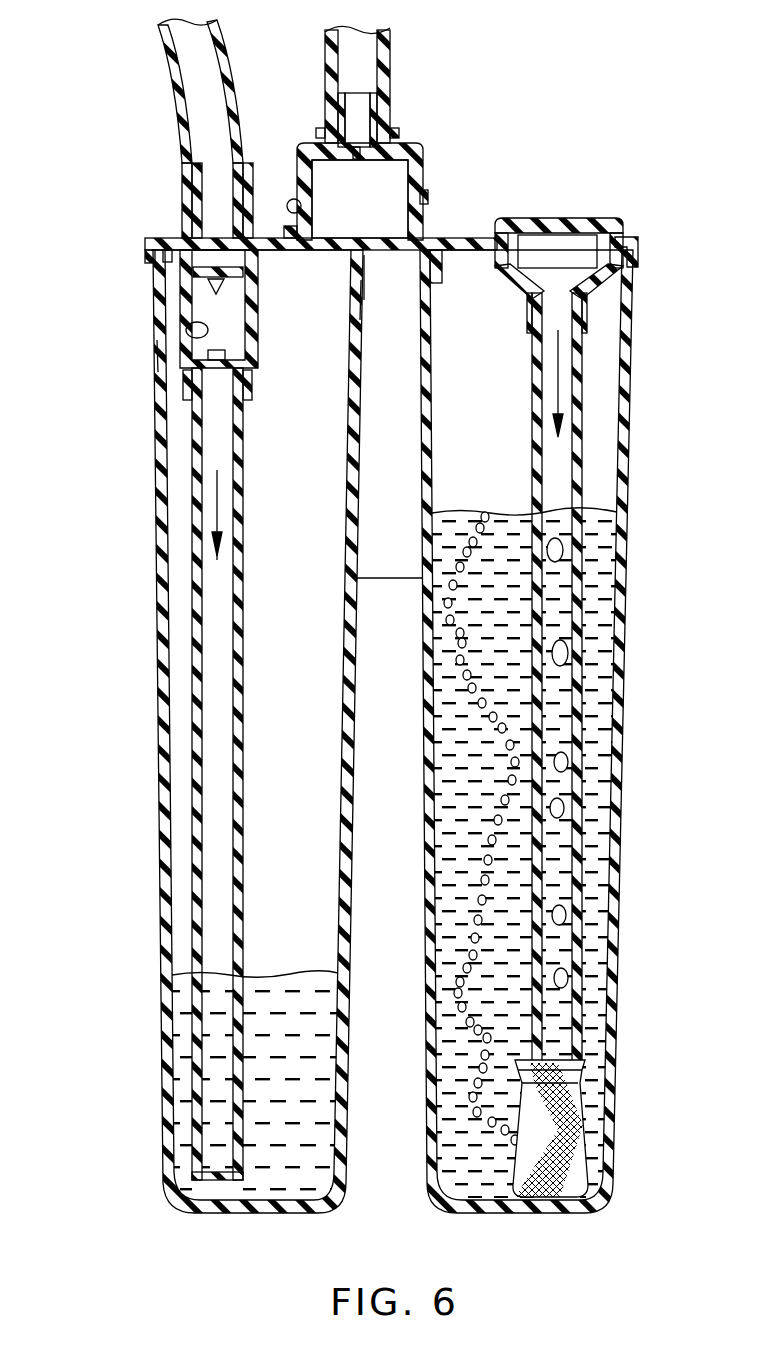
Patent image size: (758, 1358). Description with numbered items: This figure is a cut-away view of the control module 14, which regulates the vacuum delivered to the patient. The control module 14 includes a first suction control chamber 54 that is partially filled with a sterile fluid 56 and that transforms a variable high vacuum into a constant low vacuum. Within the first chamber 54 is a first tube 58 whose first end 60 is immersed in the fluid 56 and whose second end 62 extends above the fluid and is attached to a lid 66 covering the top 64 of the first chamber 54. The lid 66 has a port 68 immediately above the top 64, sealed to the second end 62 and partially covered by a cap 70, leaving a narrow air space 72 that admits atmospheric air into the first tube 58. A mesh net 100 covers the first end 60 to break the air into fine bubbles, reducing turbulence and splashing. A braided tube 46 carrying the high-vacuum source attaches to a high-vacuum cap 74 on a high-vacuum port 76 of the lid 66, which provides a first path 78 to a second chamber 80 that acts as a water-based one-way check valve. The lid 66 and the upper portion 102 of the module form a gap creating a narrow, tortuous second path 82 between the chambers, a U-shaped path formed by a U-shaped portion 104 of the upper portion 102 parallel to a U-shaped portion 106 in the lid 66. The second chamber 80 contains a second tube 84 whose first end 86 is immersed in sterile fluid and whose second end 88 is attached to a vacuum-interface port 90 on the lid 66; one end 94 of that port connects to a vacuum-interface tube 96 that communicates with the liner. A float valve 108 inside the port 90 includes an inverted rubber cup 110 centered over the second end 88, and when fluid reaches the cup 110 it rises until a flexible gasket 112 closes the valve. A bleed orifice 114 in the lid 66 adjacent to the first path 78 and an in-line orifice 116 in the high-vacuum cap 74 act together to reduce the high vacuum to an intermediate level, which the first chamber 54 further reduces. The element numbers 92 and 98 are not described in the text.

The control module 14 is at (628, 589).
The braided tube 46 is at (383, 46).
The first suction control chamber 54 is at (600, 665).
The sterile fluid 56 is at (480, 627).
The first tube 58 is at (577, 408).
The first end of first tube 60 is at (560, 1050).
The second end of first tube 62 is at (563, 303).
The top of first chamber 64 is at (638, 250).
The lid 66 is at (497, 250).
The port 68 is at (487, 263).
The cap 70 is at (563, 220).
The narrow air space 72 is at (620, 237).
The high-vacuum cap 74 is at (414, 172).
The high-vacuum port 76 is at (292, 214).
The first path 78 is at (346, 225).
The second chamber 80 is at (158, 577).
The second path 82 is at (350, 298).
The second tube 84 is at (218, 662).
The first end of second tube 86 is at (208, 1130).
The second end of second tube 88 is at (243, 382).
The vacuum-interface port 90 is at (257, 318).
The container side wall 92 is at (152, 355).
The end of vacuum-interface port 94 is at (183, 202).
The vacuum-interface tube 96 is at (172, 72).
The liquid in first container 98 is at (303, 1037).
The mesh net 100 is at (575, 1170).
The upper portion of control module 102 is at (385, 262).
The U-shaped portion of upper portion 104 is at (368, 332).
The U-shaped portion of lid 106 is at (442, 250).
The float valve 108 is at (243, 272).
The inverted rubber cup 110 is at (188, 332).
The flexible gasket 112 is at (213, 285).
The bleed orifice 114 is at (295, 228).
The in-line orifice 116 is at (357, 160).